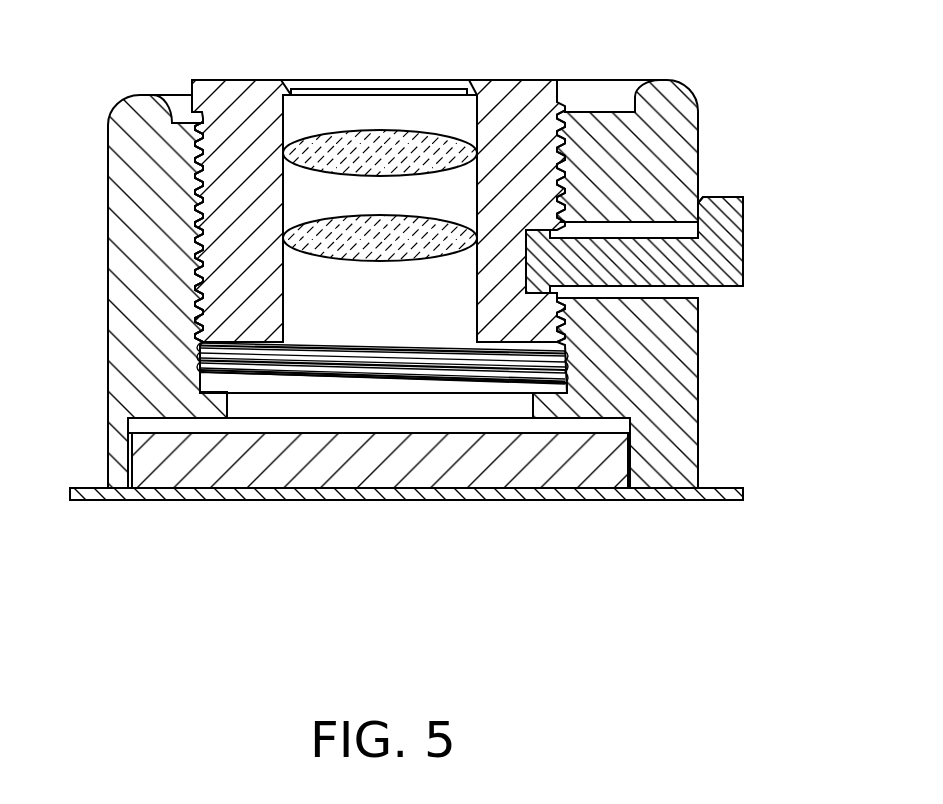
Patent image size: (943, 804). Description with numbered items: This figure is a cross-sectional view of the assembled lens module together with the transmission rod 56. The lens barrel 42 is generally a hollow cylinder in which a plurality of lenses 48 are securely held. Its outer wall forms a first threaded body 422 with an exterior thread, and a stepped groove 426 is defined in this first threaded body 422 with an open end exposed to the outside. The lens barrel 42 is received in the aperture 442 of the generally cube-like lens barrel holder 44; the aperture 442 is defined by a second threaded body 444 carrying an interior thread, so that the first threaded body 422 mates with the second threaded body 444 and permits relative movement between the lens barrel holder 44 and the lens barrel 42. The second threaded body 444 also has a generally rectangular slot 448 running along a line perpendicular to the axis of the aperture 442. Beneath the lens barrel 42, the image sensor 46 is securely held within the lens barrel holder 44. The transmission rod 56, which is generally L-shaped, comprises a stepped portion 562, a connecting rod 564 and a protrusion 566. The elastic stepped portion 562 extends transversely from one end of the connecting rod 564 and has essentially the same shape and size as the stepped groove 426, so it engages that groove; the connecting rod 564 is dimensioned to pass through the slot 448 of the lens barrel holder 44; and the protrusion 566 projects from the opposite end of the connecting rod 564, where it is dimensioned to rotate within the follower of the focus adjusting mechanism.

The lens barrel 42 is at (296, 178).
The first threaded body 422 is at (245, 162).
The stepped groove 426 is at (535, 232).
The lens barrel holder 44 is at (414, 284).
The aperture 442 is at (227, 382).
The second threaded body 444 is at (153, 352).
The slot 448 is at (645, 230).
The image sensor 46 is at (297, 460).
The lenses 48 is at (363, 160).
The transmission rod 56 is at (672, 385).
The stepped portion 562 is at (538, 275).
The connecting rod 564 is at (682, 272).
The protrusion 566 is at (718, 222).